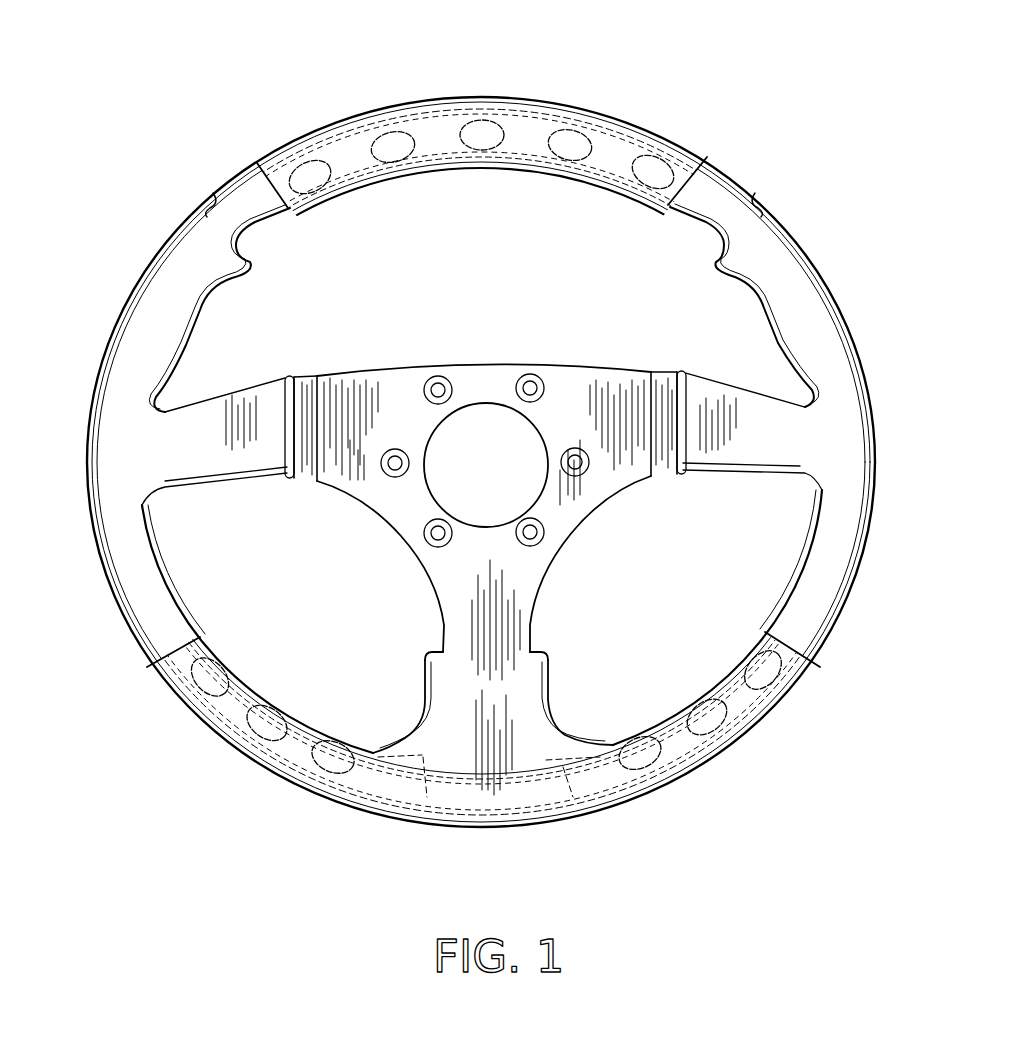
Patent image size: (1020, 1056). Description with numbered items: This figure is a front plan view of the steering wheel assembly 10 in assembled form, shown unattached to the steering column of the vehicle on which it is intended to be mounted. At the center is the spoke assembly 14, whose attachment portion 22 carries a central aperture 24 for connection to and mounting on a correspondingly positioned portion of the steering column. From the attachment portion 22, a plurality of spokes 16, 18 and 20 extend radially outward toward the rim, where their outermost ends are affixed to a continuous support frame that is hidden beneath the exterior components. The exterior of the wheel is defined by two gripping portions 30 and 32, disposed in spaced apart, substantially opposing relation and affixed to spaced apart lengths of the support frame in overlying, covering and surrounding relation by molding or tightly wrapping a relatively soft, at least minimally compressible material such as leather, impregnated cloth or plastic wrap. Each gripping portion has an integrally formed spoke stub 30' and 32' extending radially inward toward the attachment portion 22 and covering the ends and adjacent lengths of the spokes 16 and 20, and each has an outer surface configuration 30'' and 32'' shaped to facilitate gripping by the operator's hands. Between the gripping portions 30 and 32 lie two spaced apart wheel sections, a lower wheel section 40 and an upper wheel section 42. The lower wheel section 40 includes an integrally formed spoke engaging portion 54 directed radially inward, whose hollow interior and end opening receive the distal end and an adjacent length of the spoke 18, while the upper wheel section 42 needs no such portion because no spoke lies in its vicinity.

The steering wheel assembly 10 is at (627, 86).
The spoke assembly 14 is at (514, 358).
The spoke 16 is at (373, 380).
The spoke 18 is at (512, 607).
The spoke 20 is at (635, 455).
The attachment portion 22 is at (570, 393).
The central aperture 24 is at (442, 437).
The gripping portion 30 is at (450, 462).
The spoke stub 30' is at (218, 405).
The outer surface configuration 30'' is at (263, 310).
The gripping portion 32 is at (506, 462).
The spoke stub 32' is at (749, 393).
The outer surface configuration 32'' is at (705, 307).
The lower wheel section 40 is at (383, 825).
The upper wheel section 42 is at (376, 98).
The spoke engaging portion 54 is at (411, 688).